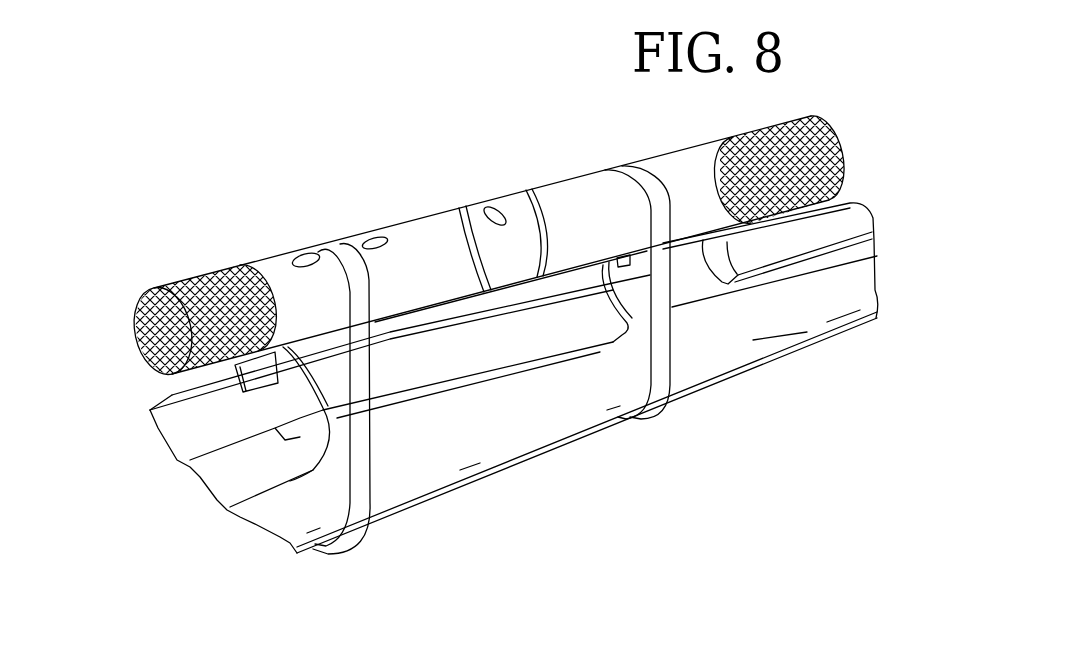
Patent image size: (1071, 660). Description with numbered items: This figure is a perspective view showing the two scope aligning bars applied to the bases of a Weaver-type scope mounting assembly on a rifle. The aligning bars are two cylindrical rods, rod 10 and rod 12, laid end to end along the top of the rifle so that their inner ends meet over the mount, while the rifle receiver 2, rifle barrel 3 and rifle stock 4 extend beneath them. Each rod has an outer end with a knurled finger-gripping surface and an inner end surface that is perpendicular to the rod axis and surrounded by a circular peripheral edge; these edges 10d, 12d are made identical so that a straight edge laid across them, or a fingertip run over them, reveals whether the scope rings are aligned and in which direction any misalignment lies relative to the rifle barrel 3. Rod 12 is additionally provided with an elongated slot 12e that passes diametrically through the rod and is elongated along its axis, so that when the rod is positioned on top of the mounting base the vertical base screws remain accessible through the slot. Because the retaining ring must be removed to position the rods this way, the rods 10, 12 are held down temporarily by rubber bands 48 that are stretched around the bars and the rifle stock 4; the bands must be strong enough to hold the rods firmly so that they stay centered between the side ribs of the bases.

The rifle receiver 2 is at (402, 382).
The rifle barrel 3 is at (850, 203).
The rifle stock 4 is at (795, 316).
The rod 10 is at (499, 245).
The circular peripheral edge 10d is at (513, 208).
The rod 12 is at (493, 245).
The circular peripheral edge 12d is at (507, 225).
The elongated slot 12e is at (307, 257).
The rubber bands 48 is at (363, 480).